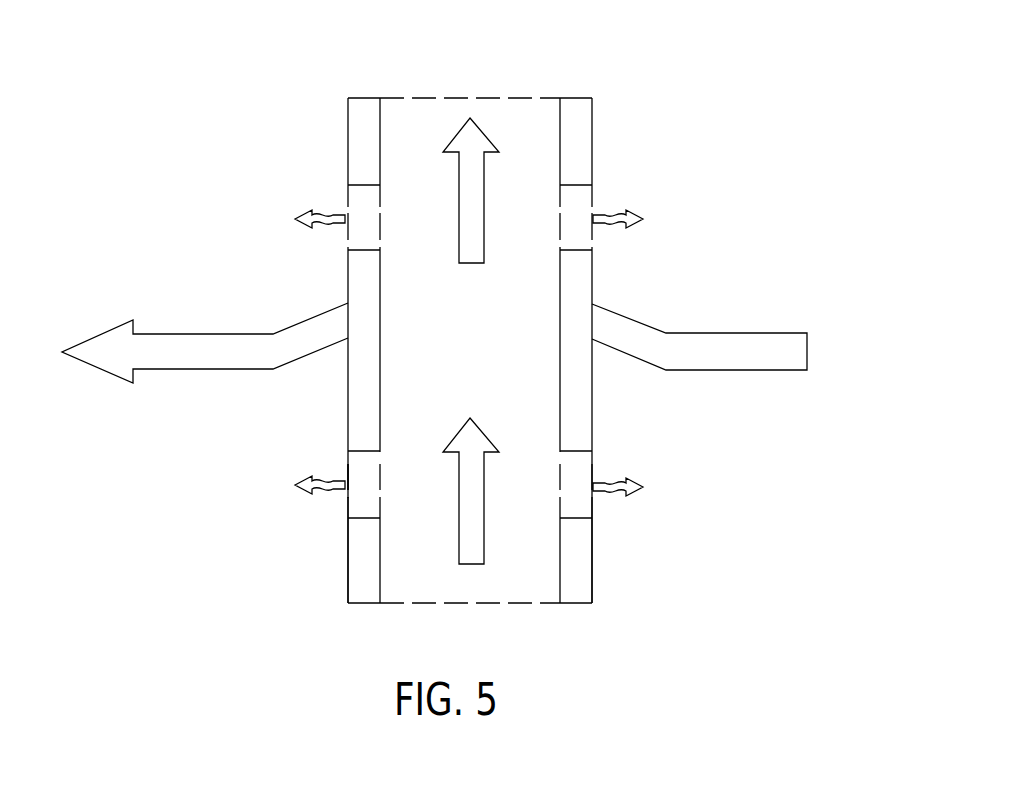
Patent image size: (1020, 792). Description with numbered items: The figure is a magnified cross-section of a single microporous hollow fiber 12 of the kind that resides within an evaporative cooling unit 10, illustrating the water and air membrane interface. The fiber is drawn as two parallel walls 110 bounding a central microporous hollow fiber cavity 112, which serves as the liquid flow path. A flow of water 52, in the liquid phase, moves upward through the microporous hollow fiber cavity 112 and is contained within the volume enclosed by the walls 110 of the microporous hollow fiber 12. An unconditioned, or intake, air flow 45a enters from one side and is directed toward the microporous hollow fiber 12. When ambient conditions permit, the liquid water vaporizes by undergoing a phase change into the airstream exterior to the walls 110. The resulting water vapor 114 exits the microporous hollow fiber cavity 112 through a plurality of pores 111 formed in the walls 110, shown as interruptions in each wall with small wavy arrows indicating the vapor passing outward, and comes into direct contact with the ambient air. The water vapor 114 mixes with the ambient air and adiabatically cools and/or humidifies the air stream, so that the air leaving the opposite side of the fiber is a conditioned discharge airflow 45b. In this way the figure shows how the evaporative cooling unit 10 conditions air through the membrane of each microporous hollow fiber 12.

The evaporative cooling unit 10 is at (593, 53).
The microporous hollow fiber 12 is at (351, 94).
The walls 110 is at (360, 152).
The pores 111 is at (372, 223).
The microporous hollow fiber cavity 112 is at (412, 379).
The water vapor 114 is at (303, 225).
The flow of water 52 is at (478, 192).
The unconditioned air flow 45a is at (757, 345).
The conditioned discharge airflow 45b is at (187, 347).